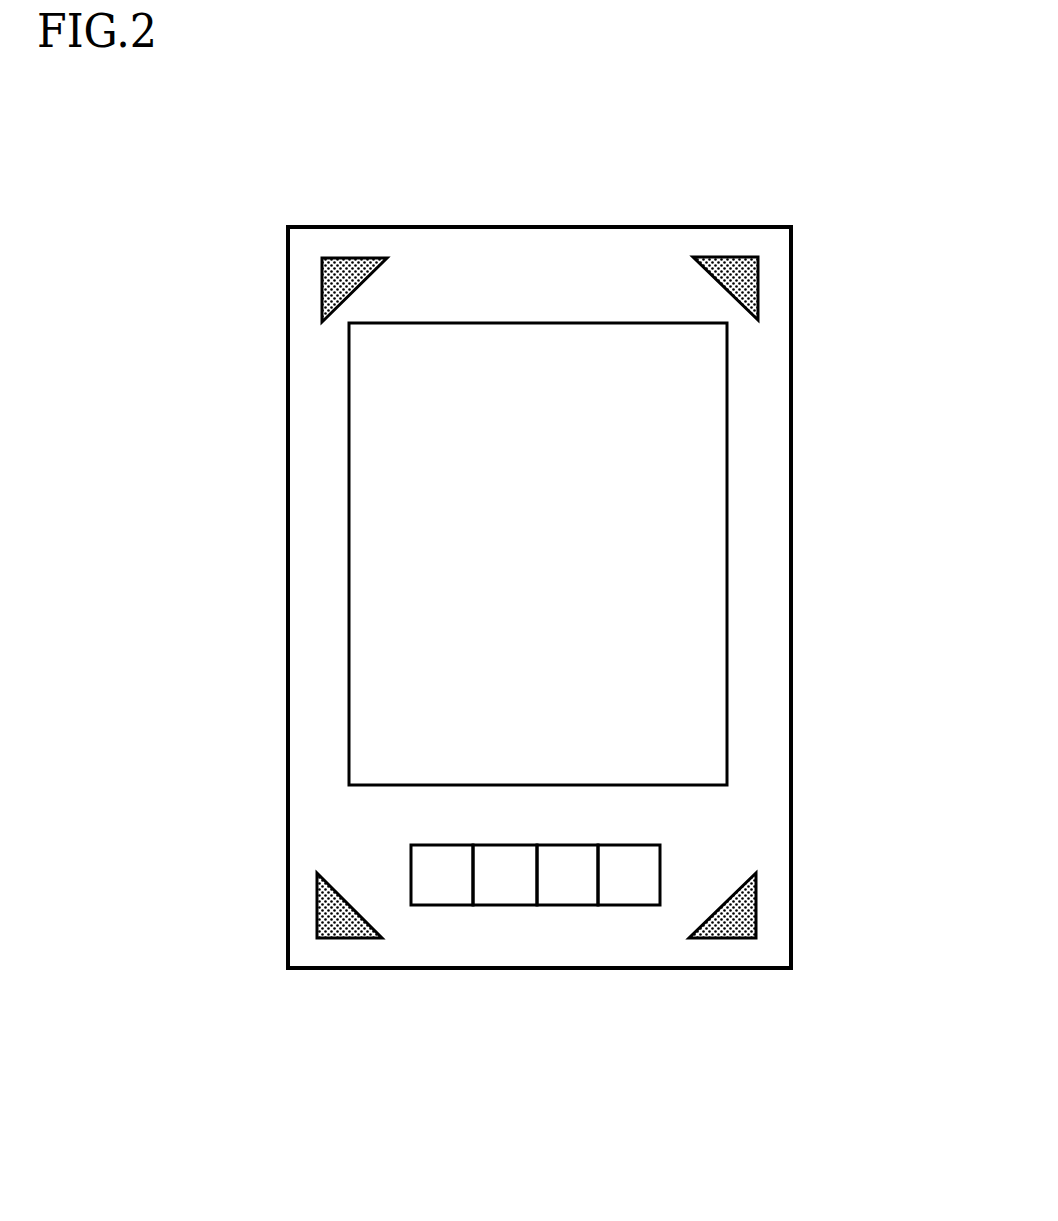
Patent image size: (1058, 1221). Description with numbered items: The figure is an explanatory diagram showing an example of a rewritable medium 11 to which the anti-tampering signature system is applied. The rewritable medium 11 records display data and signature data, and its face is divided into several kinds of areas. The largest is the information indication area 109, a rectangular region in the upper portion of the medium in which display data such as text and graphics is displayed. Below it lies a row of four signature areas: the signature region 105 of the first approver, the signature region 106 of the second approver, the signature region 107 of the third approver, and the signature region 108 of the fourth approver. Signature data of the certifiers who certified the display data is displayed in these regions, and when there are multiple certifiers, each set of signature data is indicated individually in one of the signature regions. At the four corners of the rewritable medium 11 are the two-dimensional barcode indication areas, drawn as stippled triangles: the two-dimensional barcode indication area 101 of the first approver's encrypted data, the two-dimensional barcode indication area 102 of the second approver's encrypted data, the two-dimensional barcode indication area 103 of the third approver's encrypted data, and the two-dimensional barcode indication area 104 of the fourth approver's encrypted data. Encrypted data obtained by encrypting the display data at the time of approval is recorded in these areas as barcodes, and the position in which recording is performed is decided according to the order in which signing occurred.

The rewritable medium 11 is at (790, 712).
The two-dimensional barcode indication area of the first approver's encrypted data 101 is at (756, 912).
The two-dimensional barcode indication area of the second approver's encrypted data 102 is at (758, 295).
The two-dimensional barcode indication area of the third approver's encrypted data 103 is at (317, 912).
The two-dimensional barcode indication area of the fourth approver's encrypted data 104 is at (322, 298).
The signature region of the first approver 105 is at (635, 905).
The signature region of the second approver 106 is at (573, 905).
The signature region of the third approver 107 is at (510, 905).
The signature region of the fourth approver 108 is at (448, 905).
The information indication area 109 is at (542, 323).